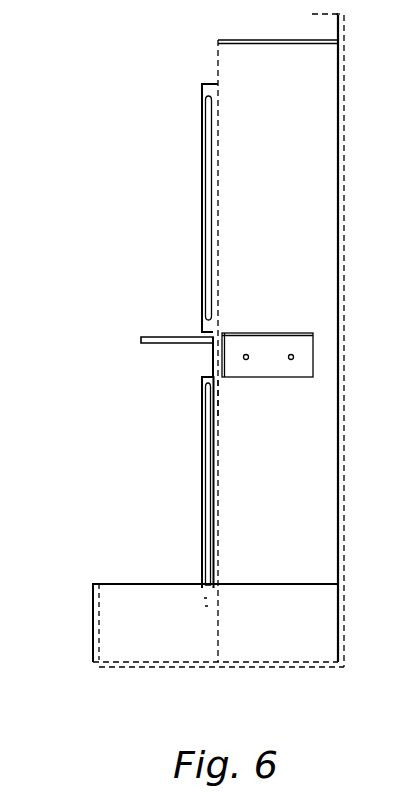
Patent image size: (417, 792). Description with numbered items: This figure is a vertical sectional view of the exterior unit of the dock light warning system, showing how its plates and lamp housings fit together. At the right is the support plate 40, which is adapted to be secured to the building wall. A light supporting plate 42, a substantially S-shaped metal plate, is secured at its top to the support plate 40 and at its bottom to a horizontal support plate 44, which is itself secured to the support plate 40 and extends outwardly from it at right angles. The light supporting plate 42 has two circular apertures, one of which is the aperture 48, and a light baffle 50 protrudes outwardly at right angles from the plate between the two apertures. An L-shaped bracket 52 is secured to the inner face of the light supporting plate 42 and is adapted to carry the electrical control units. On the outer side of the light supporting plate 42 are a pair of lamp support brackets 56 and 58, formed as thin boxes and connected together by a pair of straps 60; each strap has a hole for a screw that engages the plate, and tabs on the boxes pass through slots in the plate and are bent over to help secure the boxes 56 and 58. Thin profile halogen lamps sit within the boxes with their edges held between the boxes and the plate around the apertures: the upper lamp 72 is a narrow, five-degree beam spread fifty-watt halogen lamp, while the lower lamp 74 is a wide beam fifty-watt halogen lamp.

The support plate 40 is at (338, 136).
The light supporting plate 42 is at (216, 63).
The horizontal support plate 44 is at (125, 624).
The circular aperture 48 is at (218, 409).
The light baffle 50 is at (156, 337).
The L-shaped bracket 52 is at (244, 333).
The lamp support bracket 56 is at (202, 116).
The lamp support bracket 58 is at (202, 398).
The strap 60 is at (212, 356).
The upper lamp 72 is at (210, 181).
The lower lamp 74 is at (209, 488).